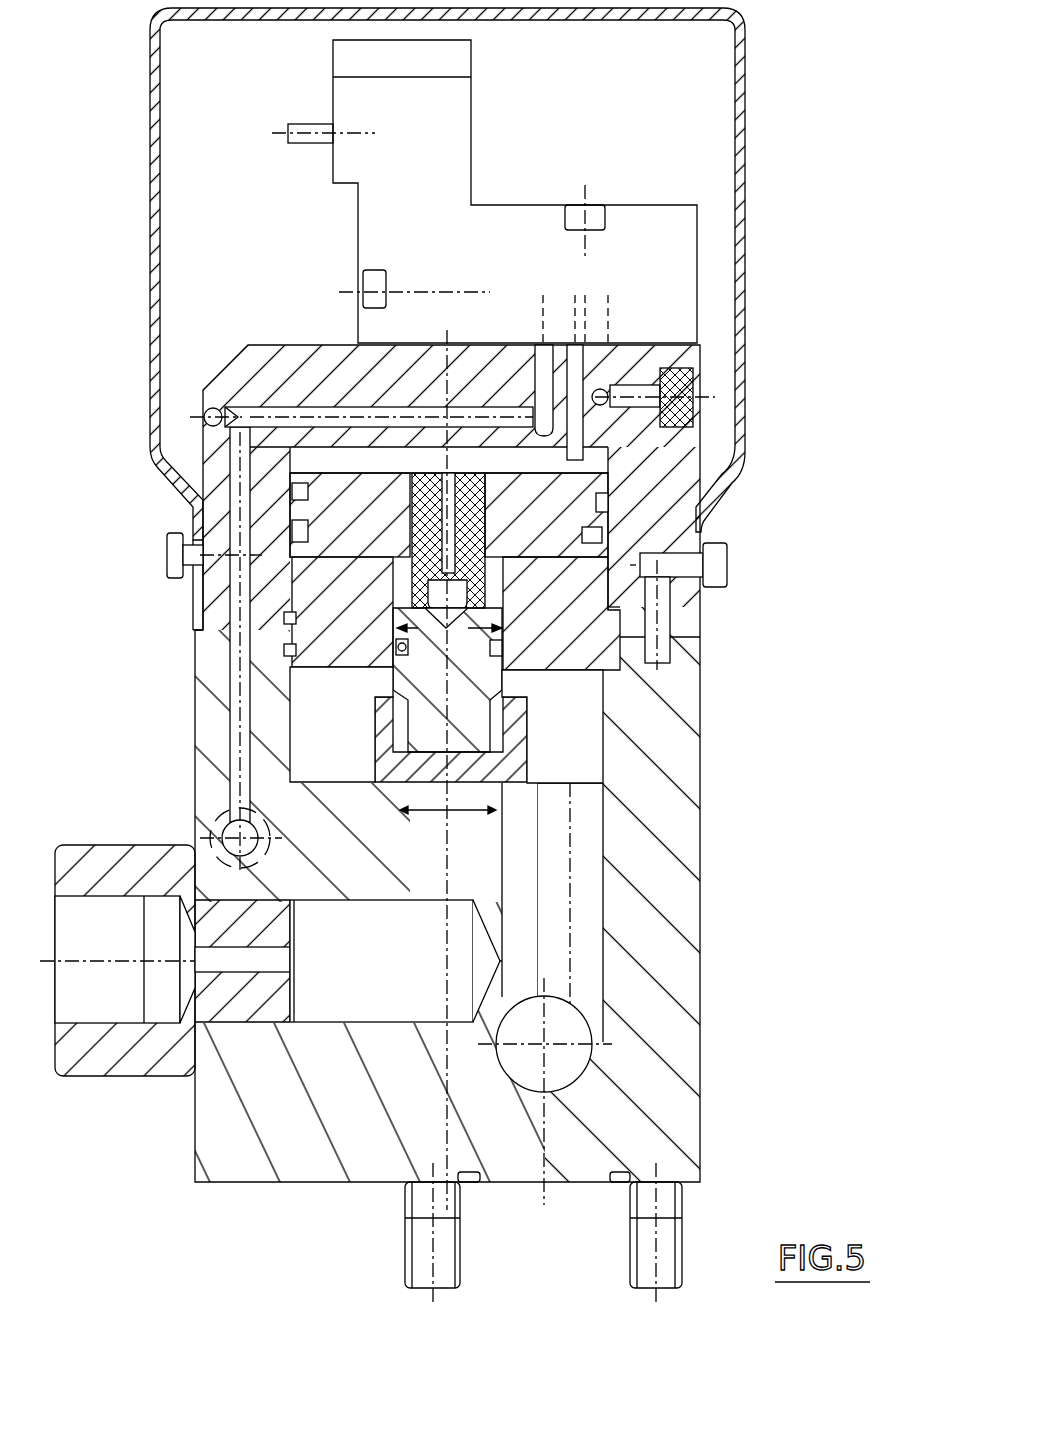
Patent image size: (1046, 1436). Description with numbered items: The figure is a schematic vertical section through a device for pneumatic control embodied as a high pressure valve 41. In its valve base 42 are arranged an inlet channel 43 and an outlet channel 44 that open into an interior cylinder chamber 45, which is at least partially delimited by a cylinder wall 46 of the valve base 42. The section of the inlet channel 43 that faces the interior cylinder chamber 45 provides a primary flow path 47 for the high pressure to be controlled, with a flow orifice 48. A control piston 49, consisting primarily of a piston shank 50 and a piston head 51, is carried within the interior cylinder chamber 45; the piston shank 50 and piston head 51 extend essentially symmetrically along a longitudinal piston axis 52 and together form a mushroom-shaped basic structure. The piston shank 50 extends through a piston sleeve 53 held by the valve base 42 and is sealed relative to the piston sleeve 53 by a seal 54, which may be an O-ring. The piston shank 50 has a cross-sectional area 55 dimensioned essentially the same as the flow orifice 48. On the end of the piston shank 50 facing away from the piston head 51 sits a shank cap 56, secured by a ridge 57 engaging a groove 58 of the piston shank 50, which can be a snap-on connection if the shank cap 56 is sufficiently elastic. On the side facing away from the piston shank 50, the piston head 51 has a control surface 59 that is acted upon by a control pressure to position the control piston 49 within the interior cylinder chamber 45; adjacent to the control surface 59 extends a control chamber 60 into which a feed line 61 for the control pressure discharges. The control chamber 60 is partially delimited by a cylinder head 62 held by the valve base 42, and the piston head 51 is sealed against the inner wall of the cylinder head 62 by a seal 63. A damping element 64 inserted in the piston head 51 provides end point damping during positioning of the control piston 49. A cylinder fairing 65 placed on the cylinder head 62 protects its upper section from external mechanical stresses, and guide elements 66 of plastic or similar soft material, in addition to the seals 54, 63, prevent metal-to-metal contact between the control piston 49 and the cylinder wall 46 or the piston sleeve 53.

The high pressure valve 41 is at (732, 774).
The valve base 42 is at (690, 1042).
The inlet channel 43 is at (450, 782).
The outlet channel 44 is at (585, 897).
The interior cylinder chamber 45 is at (567, 715).
The cylinder wall 46 is at (675, 733).
The primary flow path 47 is at (480, 850).
The flow orifice 48 is at (445, 1020).
The control piston 49 is at (335, 686).
The piston shank 50 is at (627, 688).
The piston head 51 is at (300, 520).
The longitudinal piston axis 52 is at (450, 335).
The piston sleeve 53 is at (284, 620).
The seal 54 is at (292, 665).
The cross-sectional area 55 is at (380, 786).
The shank cap 56 is at (397, 788).
The ridge 57 is at (383, 697).
The groove 58 is at (352, 677).
The control surface 59 is at (732, 462).
The control chamber 60 is at (323, 457).
The feed line 61 is at (585, 378).
The cylinder head 62 is at (668, 527).
The seal 63 is at (215, 528).
The damping element 64 is at (423, 473).
The cylinder fairing 65 is at (745, 83).
The guide elements 66 is at (640, 503).